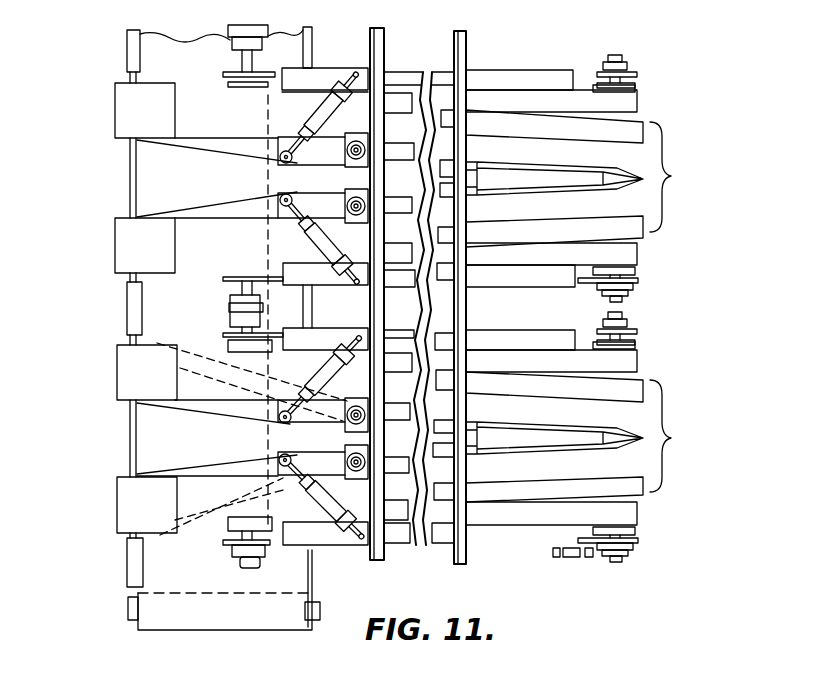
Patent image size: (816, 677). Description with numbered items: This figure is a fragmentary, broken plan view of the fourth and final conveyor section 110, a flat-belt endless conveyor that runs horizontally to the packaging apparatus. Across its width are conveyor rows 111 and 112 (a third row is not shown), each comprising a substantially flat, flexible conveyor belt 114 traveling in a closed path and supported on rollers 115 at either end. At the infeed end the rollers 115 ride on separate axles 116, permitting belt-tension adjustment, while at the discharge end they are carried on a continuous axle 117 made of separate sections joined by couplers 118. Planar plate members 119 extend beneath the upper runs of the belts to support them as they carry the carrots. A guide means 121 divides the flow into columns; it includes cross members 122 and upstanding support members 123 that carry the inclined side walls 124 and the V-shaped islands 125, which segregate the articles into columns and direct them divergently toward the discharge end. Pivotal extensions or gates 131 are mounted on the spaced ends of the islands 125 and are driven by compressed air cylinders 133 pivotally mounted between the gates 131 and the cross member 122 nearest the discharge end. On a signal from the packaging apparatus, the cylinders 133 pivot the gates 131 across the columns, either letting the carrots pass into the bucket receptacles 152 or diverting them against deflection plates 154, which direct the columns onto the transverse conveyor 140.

The final conveyor section 110 is at (710, 64).
The conveyor row 111 is at (493, 476).
The conveyor row 112 is at (522, 215).
The conveyor belt 114 is at (297, 184).
The rollers 115 is at (230, 85).
The separate axles 116 is at (623, 300).
The continuous axle 117 is at (248, 575).
The couplers 118 is at (243, 288).
The plate members 119 is at (525, 275).
The guide means 121 is at (524, 508).
The cross members 122 is at (375, 308).
The upstanding support members 123 is at (448, 553).
The inclined side walls 124 is at (545, 135).
The V-shaped islands 125 is at (567, 430).
The pivotal extensions or gates 131 is at (190, 150).
The compressed air cylinders 133 is at (330, 99).
The transverse conveyor 140 is at (198, 623).
The bucket receptacles 152 is at (118, 108).
The deflection plates 154 is at (126, 49).